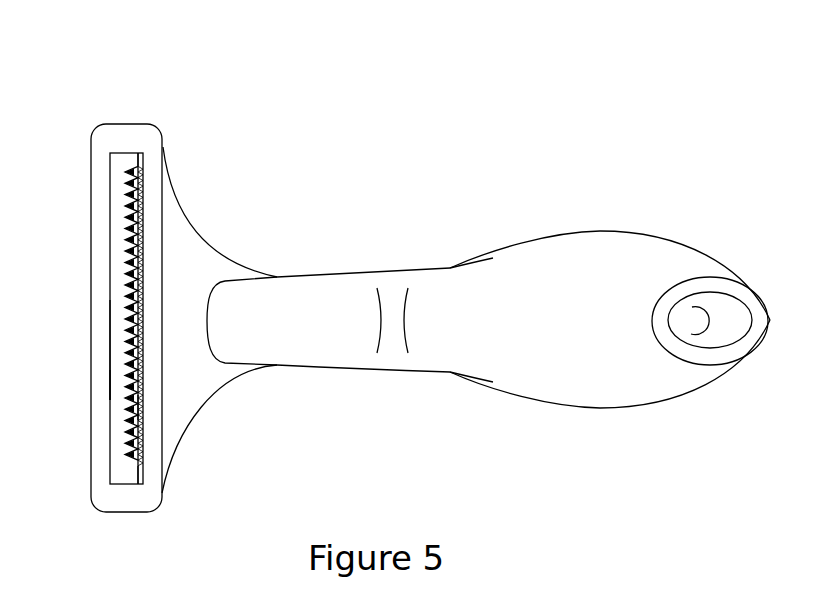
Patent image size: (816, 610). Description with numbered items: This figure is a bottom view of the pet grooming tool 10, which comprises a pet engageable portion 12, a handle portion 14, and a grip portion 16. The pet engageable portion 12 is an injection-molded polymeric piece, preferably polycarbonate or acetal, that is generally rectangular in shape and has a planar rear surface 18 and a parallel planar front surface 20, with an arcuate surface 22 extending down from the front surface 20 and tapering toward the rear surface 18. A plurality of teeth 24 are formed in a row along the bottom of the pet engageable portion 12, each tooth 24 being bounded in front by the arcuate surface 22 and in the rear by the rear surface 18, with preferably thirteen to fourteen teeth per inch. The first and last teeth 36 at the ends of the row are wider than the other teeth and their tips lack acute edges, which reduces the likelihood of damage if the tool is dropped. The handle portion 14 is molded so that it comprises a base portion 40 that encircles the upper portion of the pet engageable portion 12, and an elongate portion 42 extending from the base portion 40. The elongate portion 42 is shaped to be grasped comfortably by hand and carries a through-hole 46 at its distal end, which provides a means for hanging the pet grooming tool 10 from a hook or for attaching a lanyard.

The pet grooming tool 10 is at (343, 133).
The pet engageable portion 12 is at (117, 165).
The handle portion 14 is at (213, 270).
The grip portion 16 is at (465, 307).
The rear surface 18 is at (141, 408).
The front surface 20 is at (110, 353).
The arcuate surface 22 is at (115, 383).
The teeth 24 is at (127, 222).
The first and last teeth 36 is at (127, 165).
The base portion 40 is at (100, 142).
The elongate portion 42 is at (663, 316).
The through-hole 46 is at (703, 310).